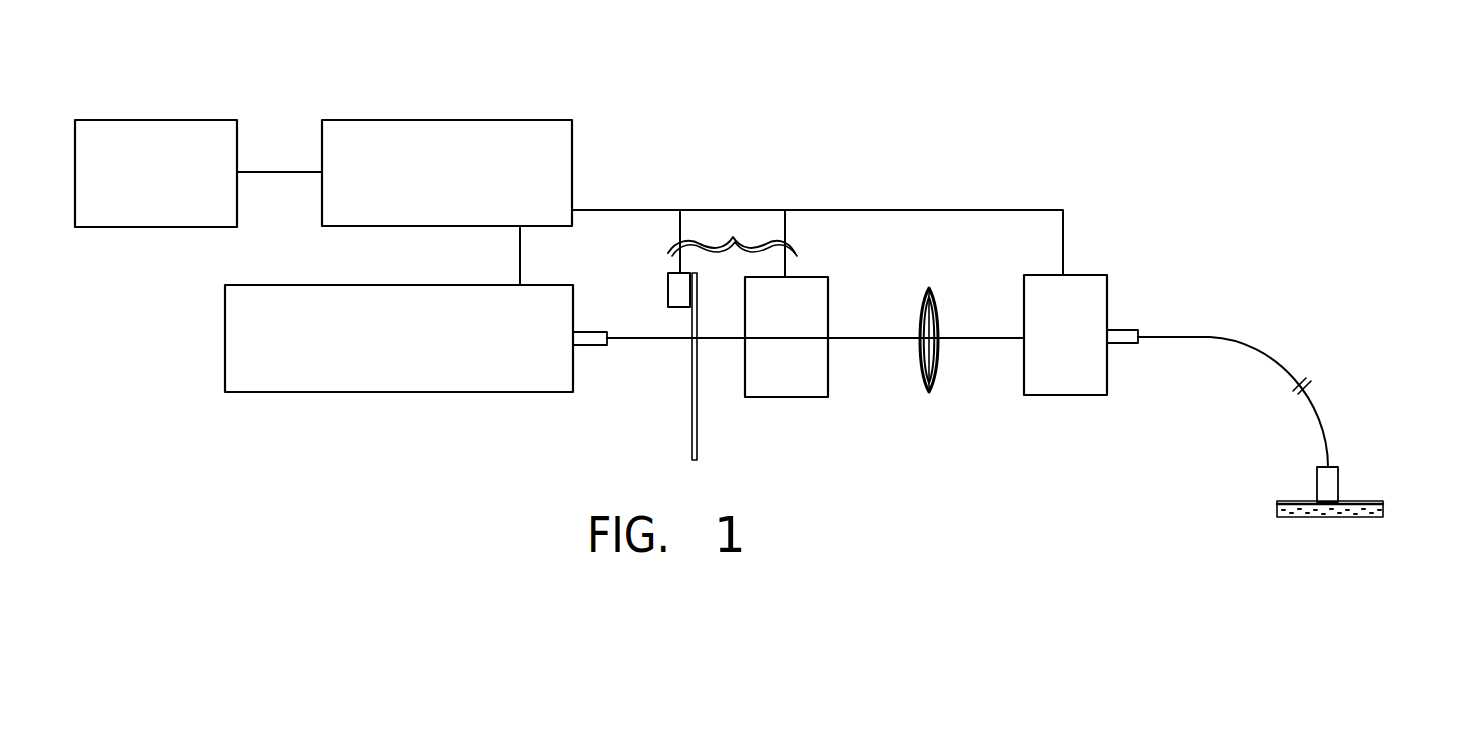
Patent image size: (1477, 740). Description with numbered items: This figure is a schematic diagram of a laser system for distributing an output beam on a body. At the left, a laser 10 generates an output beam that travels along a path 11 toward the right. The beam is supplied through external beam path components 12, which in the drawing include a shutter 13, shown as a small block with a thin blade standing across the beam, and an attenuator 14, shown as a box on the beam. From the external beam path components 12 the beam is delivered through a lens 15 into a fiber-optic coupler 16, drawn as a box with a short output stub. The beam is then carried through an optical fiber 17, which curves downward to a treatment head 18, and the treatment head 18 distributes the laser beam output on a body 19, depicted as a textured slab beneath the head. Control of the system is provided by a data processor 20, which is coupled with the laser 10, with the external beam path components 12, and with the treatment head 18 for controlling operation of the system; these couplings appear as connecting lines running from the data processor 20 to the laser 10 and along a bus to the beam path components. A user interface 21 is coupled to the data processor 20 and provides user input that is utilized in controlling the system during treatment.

The laser 10 is at (470, 380).
The path 11 is at (642, 338).
The external beam path components 12 is at (733, 240).
The shutter 13 is at (697, 388).
The attenuator 14 is at (798, 283).
The lens 15 is at (930, 290).
The fiber-optic coupler 16 is at (1060, 293).
The optical fiber 17 is at (1177, 340).
The treatment head 18 is at (1330, 467).
The body 19 is at (1338, 517).
The data processor 20 is at (424, 120).
The user interface 21 is at (160, 120).